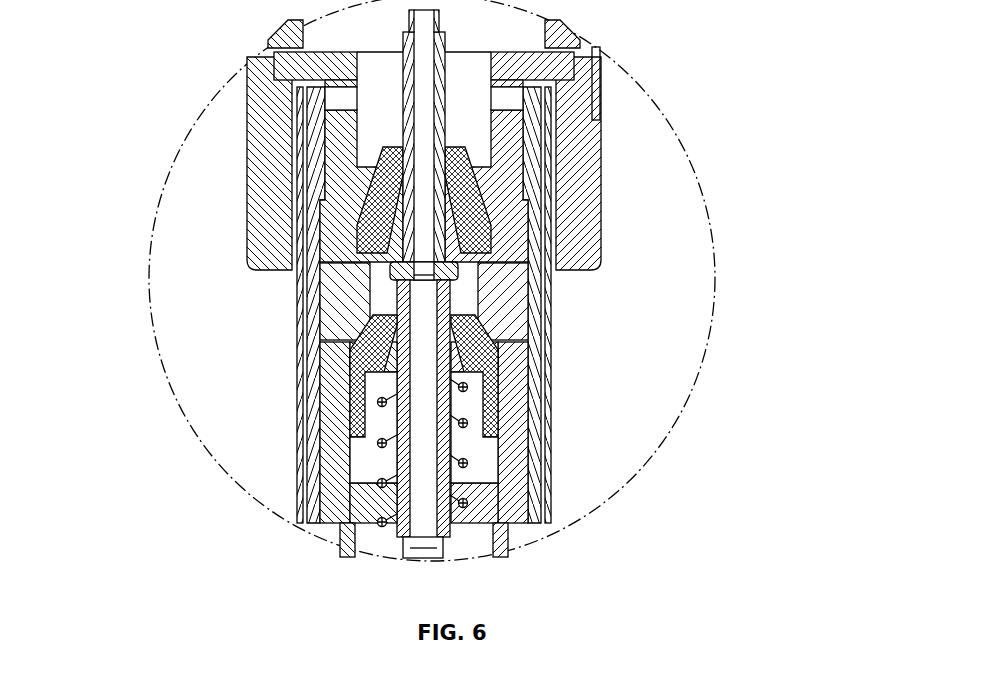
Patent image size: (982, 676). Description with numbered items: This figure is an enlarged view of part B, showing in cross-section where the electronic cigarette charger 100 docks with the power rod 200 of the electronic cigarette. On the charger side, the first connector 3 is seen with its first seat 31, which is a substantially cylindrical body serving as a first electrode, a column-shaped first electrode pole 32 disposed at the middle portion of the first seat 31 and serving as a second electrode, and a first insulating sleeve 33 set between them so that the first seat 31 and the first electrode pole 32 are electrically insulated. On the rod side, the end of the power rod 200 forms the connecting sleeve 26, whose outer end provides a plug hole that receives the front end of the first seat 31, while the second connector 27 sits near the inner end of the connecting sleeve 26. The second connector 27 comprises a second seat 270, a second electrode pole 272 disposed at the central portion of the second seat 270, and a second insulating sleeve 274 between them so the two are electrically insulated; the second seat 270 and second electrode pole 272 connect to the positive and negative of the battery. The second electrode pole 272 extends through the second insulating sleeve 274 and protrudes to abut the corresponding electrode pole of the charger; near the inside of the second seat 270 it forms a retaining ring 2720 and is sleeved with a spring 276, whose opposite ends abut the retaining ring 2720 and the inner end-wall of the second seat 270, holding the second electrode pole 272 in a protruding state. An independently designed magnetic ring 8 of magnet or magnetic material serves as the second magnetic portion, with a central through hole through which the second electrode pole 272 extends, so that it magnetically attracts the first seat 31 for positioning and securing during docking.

The first connector 3 is at (307, 266).
The first seat 31 is at (335, 132).
The first electrode pole 32 is at (402, 125).
The first insulating sleeve 33 is at (395, 210).
The connecting sleeve 26 is at (317, 232).
The magnetic ring 8 is at (333, 292).
The second connector 27 is at (295, 436).
The second insulating sleeve 274 is at (352, 352).
The second electrode pole 272 is at (350, 387).
The retaining ring 2720 is at (452, 382).
The spring 276 is at (350, 446).
The second seat 270 is at (333, 493).
The electronic cigarette charger 100 is at (585, 175).
The power rod 200 is at (552, 465).
The part B is at (627, 72).